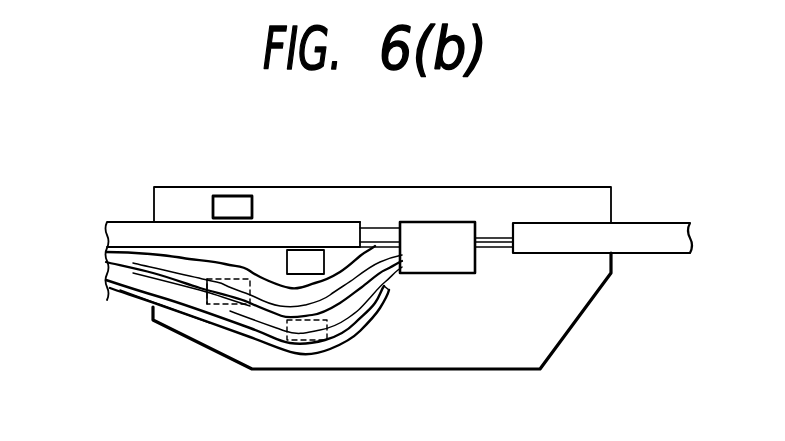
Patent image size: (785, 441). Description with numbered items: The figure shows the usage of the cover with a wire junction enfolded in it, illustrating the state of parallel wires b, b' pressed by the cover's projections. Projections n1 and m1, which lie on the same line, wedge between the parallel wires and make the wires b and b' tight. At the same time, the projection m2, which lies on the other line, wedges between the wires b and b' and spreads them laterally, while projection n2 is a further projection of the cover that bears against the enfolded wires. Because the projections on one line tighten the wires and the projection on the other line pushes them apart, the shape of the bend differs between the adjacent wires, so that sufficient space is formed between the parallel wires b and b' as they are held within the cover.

The projection n1 is at (311, 262).
The projection n2 is at (233, 206).
The projection m1 is at (303, 333).
The projection m2 is at (229, 296).
The wire b is at (266, 337).
The wire b' is at (254, 332).